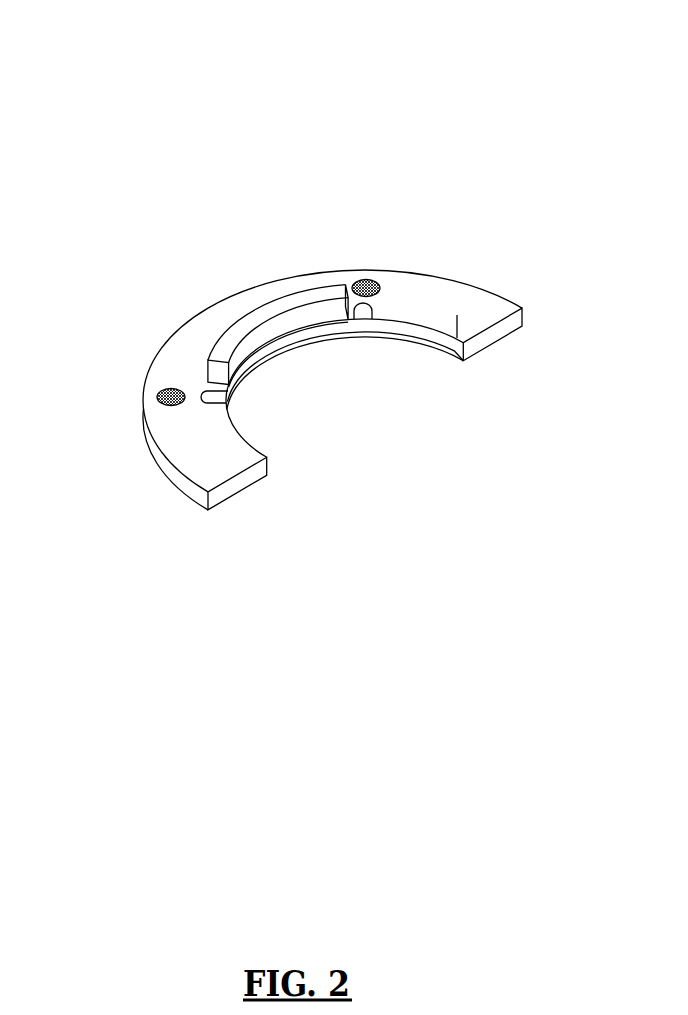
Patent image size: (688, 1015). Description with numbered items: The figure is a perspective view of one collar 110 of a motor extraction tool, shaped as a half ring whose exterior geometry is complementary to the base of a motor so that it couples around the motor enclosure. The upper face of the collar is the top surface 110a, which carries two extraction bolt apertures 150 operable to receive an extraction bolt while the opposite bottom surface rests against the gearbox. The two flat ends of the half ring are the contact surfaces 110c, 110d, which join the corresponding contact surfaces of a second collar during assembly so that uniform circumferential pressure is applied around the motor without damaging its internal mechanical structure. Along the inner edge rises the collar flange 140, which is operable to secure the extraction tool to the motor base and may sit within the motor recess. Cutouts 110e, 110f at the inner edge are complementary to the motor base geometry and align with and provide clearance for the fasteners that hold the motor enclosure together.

The collar 110 is at (320, 295).
The top surface 110a is at (195, 445).
The contact surface 110c is at (233, 480).
The contact surface 110d is at (508, 328).
The cutout 110e is at (215, 398).
The cutout 110f is at (367, 318).
The collar flange 140 is at (268, 300).
The extraction bolt aperture 150 is at (161, 392).